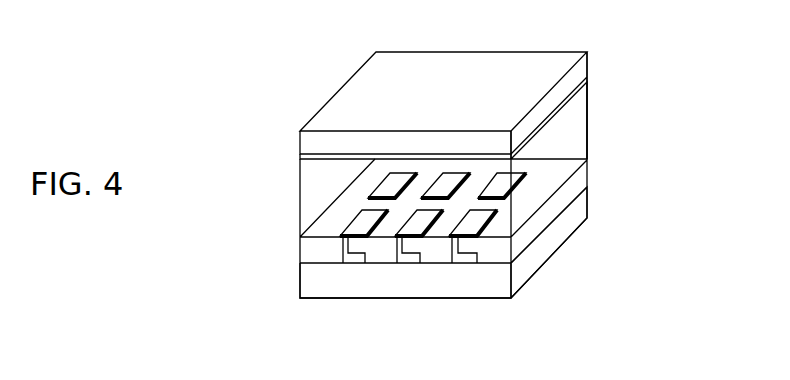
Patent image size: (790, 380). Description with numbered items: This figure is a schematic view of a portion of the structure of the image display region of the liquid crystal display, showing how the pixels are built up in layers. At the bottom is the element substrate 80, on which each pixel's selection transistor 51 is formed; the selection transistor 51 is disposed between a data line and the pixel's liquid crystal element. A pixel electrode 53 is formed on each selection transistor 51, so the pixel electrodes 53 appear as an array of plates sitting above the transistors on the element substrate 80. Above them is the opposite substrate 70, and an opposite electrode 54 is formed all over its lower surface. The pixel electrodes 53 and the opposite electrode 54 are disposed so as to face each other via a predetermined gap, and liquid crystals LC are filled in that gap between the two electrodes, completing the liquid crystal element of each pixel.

The liquid crystals LC is at (589, 117).
The opposite substrate 70 is at (300, 133).
The opposite electrode 54 is at (300, 160).
The pixel electrode 53 is at (364, 222).
The selection transistor 51 is at (343, 255).
The element substrate 80 is at (300, 284).